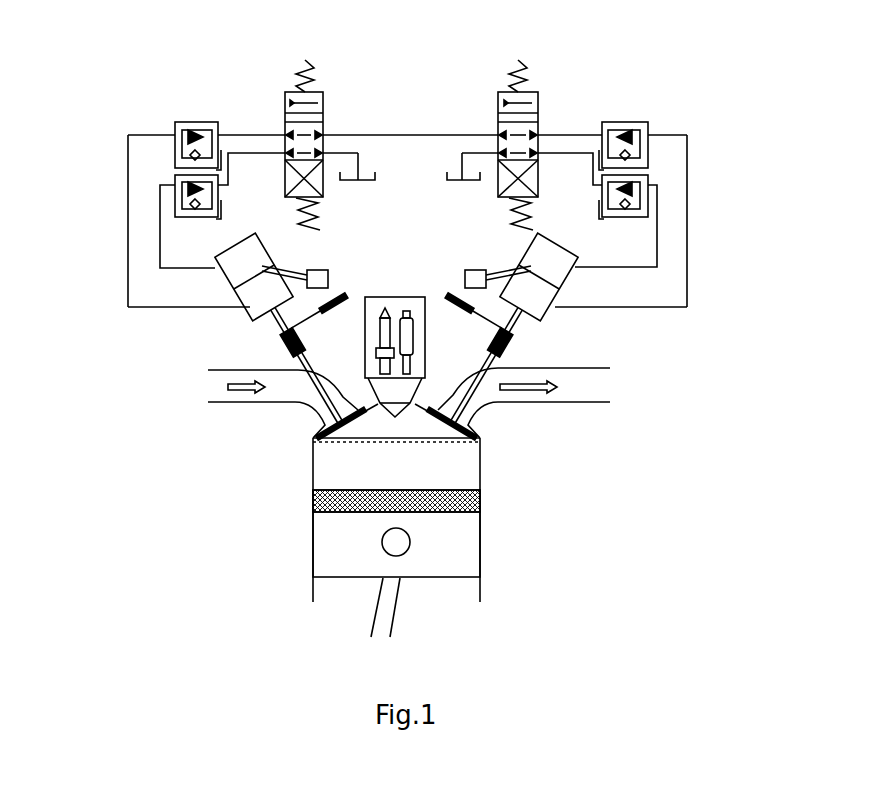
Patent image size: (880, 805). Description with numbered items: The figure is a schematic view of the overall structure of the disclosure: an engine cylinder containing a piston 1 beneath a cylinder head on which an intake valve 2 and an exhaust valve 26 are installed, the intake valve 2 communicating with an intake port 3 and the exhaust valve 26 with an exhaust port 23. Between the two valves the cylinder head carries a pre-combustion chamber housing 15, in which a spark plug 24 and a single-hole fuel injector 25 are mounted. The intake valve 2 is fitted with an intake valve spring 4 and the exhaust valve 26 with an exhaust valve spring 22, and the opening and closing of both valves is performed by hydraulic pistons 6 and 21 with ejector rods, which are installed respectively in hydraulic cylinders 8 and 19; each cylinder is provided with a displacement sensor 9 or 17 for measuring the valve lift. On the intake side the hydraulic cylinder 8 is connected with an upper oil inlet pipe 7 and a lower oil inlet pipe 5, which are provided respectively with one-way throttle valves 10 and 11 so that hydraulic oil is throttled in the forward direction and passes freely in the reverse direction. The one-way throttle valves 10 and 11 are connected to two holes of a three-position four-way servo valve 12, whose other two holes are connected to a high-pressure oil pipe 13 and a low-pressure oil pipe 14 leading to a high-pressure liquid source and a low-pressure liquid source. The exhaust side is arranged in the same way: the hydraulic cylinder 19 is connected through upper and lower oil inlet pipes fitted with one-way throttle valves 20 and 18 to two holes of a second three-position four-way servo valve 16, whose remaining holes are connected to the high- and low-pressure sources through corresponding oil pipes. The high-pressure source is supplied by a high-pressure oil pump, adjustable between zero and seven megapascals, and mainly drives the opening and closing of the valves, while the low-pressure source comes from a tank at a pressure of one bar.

The piston 1 is at (335, 547).
The intake valve 2 is at (335, 426).
The intake port 3 is at (206, 385).
The intake valve spring 4 is at (282, 347).
The lower oil inlet pipe 5 is at (128, 309).
The hydraulic piston 6 is at (128, 278).
The upper oil inlet pipe 7 is at (160, 268).
The hydraulic cylinder 8 is at (221, 268).
The displacement sensor 9 is at (215, 257).
The one-way throttle valve 10 is at (256, 236).
The one-way throttle valve 11 is at (175, 122).
The three-position four-way servo valve 12 is at (285, 122).
The high-pressure oil pipe 13 is at (341, 134).
The low-pressure oil pipe 14 is at (364, 168).
The pre-combustion chamber housing 15 is at (388, 297).
The three-position four-way servo valve 16 is at (573, 134).
The displacement sensor 17 is at (488, 268).
The one-way throttle valve 18 is at (648, 123).
The hydraulic cylinder 19 is at (657, 183).
The one-way throttle valve 20 is at (648, 213).
The hydraulic piston 21 is at (558, 277).
The exhaust valve spring 22 is at (518, 336).
The exhaust port 23 is at (572, 385).
The spark plug 24 is at (427, 352).
The single-hole fuel injector 25 is at (427, 386).
The exhaust valve 26 is at (482, 436).